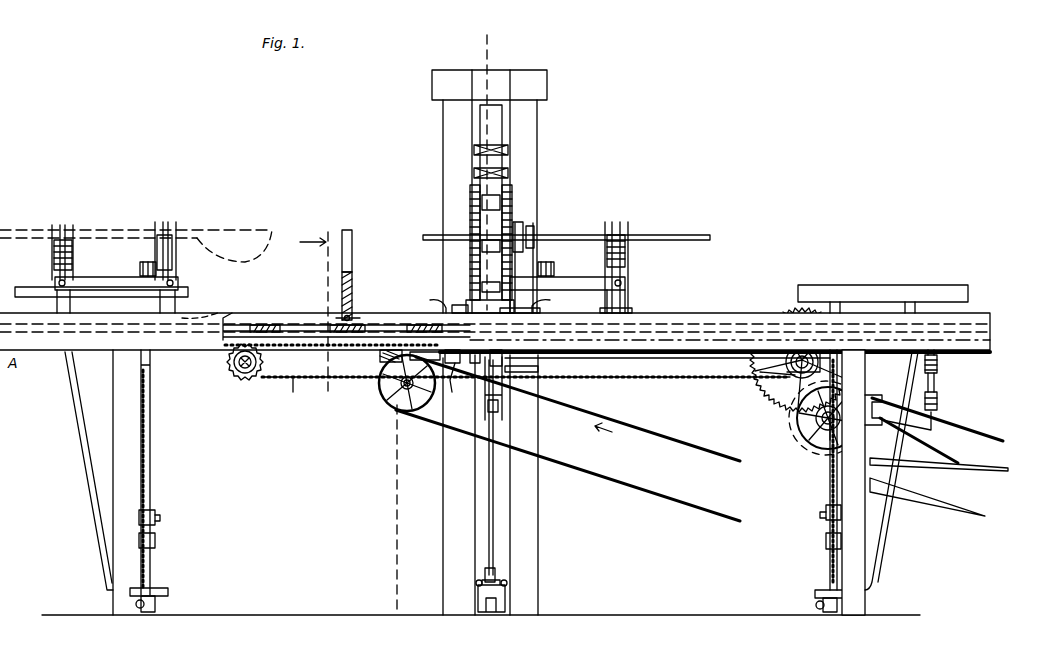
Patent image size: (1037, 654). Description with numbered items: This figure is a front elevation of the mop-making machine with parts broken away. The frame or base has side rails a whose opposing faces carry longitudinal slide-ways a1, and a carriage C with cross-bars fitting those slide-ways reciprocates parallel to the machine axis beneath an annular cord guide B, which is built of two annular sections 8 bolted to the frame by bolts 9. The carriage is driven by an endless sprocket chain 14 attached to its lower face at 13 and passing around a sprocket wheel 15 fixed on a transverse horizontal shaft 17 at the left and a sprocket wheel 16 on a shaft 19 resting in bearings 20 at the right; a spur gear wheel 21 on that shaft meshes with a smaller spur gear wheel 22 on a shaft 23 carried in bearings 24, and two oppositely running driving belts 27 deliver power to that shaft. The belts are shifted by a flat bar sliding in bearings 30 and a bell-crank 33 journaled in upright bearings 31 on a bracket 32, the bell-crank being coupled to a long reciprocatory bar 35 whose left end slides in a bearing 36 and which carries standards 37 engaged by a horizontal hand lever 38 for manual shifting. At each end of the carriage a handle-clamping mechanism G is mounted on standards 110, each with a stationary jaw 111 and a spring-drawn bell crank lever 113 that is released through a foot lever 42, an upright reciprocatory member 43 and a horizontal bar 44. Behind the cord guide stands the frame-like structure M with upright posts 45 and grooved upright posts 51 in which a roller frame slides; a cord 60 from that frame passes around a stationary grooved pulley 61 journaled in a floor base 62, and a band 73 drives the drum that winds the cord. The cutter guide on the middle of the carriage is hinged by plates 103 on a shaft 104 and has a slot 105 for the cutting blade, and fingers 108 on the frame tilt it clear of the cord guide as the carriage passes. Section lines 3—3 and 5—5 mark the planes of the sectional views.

The section line 3— 3 is at (440, 329).
The section line 5— 5 is at (315, 309).
The annular sections 8 is at (470, 218).
The bolts 9 is at (460, 305).
The chain attachment point 13 is at (404, 318).
The endless sprocket chain 14 is at (612, 379).
The sprocket wheel 15 is at (244, 380).
The sprocket wheel 16 is at (782, 372).
The transverse horizontal shaft 17 is at (234, 370).
The shaft 19 is at (798, 378).
The bearings 20 is at (790, 364).
The spur gear wheel 21 is at (798, 374).
The smaller spur gear wheel 22 is at (822, 422).
The shaft 23 is at (826, 432).
The bearings 24 is at (833, 425).
The driving belts 27 is at (957, 446).
The bearings 30 is at (878, 426).
The upright bearings 31 is at (938, 362).
The bracket 32 is at (937, 395).
The bell-crank 33 is at (938, 378).
The reciprocatory bar 35 is at (548, 360).
The bearing 36 is at (454, 380).
The standards 37 is at (530, 372).
The hand lever 38 is at (498, 350).
The foot lever 42 is at (168, 591).
The upright reciprocatory member 43 is at (151, 419).
The horizontal bar 44 is at (35, 290).
The upright posts 45 is at (452, 172).
The upright posts 51 is at (452, 483).
The cord 60 is at (493, 522).
The stationary grooved pulley 61 is at (495, 572).
The base 62 is at (505, 594).
The band 73 is at (588, 428).
The plate 103 is at (354, 302).
The shaft 104 is at (338, 323).
The slot 105 is at (352, 238).
The finger 108 is at (440, 300).
The standards 110 is at (62, 236).
The stationary jaw 111 is at (160, 225).
The bell crank lever 113 is at (176, 226).
The annular cord guide B is at (477, 202).
The carriage C is at (346, 316).
The handle-clamping mechanism G is at (343, 268).
The frame-like structure M is at (495, 191).
The side rails a is at (495, 332).
The longitudinal grooves or slide-ways a1 is at (233, 325).